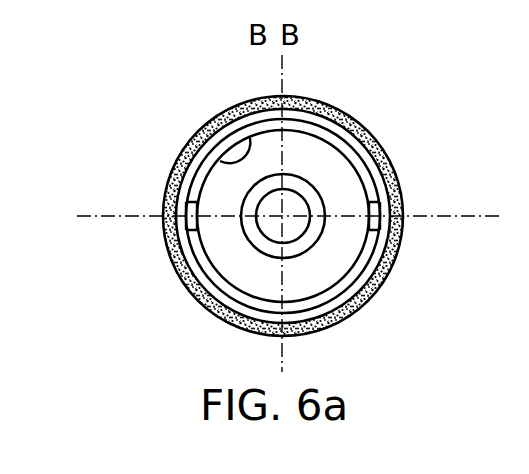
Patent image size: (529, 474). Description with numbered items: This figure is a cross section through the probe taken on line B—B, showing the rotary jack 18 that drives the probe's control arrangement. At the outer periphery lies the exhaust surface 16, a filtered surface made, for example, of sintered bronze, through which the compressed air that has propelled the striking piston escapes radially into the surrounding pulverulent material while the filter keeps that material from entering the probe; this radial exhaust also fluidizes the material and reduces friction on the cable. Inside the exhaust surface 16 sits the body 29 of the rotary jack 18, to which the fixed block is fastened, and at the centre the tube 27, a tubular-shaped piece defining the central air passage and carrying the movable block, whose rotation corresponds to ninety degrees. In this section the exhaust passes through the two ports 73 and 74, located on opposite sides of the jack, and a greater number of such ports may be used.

The exhaust surface 16 is at (358, 118).
The rotary jack 18 is at (367, 171).
The tube 27 is at (317, 187).
The body 29 is at (243, 160).
The port 73 is at (377, 209).
The port 74 is at (188, 226).